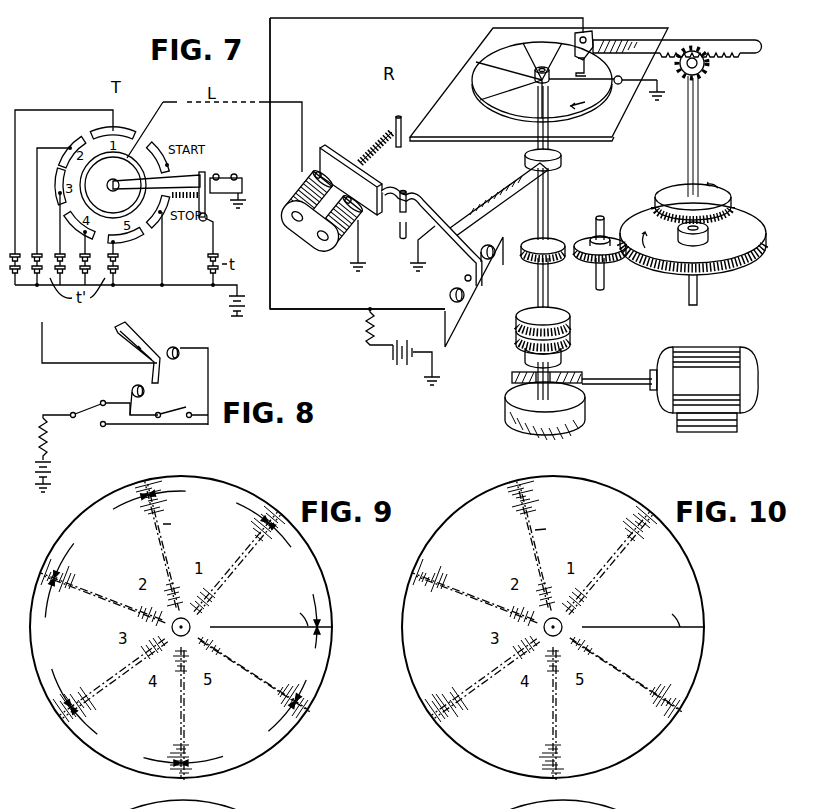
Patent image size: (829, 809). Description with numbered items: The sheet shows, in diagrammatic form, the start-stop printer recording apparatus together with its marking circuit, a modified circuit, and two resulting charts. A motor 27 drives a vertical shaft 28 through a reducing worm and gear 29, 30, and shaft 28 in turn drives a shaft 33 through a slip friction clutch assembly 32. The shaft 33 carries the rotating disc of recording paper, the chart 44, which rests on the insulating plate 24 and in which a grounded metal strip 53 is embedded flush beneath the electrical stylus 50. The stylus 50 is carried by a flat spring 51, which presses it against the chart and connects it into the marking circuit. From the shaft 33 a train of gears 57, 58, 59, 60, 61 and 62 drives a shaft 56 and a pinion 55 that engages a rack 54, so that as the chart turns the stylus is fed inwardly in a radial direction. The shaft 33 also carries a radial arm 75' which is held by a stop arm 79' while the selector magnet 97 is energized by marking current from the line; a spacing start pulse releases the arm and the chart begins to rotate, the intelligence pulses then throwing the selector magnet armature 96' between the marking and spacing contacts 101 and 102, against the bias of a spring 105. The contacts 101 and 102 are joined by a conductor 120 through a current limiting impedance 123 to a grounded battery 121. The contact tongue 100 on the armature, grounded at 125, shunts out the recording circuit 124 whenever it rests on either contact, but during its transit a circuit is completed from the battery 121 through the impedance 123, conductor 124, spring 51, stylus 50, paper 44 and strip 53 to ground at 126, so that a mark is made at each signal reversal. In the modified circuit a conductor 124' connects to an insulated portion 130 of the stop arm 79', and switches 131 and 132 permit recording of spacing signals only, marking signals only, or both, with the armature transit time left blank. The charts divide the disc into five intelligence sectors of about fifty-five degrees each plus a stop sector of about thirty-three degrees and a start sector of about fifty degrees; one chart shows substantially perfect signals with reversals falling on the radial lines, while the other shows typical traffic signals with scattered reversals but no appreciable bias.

In FIG. 7, the insulating plate 24 is at (450, 99).
In FIG. 7, the motor 27 is at (705, 347).
In FIG. 7, the vertical shaft 28 is at (553, 375).
In FIG. 7, the reducing worm 29 is at (518, 372).
In FIG. 7, the gear 30 is at (580, 416).
In FIG. 7, the slip friction clutch assembly 32 is at (572, 326).
In FIG. 7, the shaft 33 is at (550, 286).
In FIG. 7, the chart 44 is at (493, 50).
In FIG. 9, the chart 44 is at (327, 573).
In FIG. 10, the chart 44 is at (703, 573).
In FIG. 7, the stylus 50 is at (593, 76).
In FIG. 7, the flat spring 51 is at (588, 34).
In FIG. 7, the grounded metal strip 53 is at (620, 84).
In FIG. 7, the rack 54 is at (690, 42).
In FIG. 7, the pinion 55 is at (707, 72).
In FIG. 7, the shaft 56 is at (698, 135).
In FIG. 7, the gear 57 is at (716, 193).
In FIG. 7, the gear 58 is at (700, 240).
In FIG. 7, the gear 59 is at (748, 222).
In FIG. 7, the gear 60 is at (586, 232).
In FIG. 7, the gear 61 is at (604, 283).
In FIG. 7, the gear 62 is at (535, 243).
In FIG. 7, the radial arm 75' is at (505, 192).
In FIG. 7, the stop arm 79' is at (431, 238).
In FIG. 7, the selector magnet armature 96' is at (351, 170).
In FIG. 7, the selector magnet 97 is at (305, 185).
In FIG. 7, the contact tongue 100 is at (480, 256).
In FIG. 7, the marking contact 101 is at (451, 291).
In FIG. 7, the spacing contact 102 is at (489, 262).
In FIG. 7, the spring 105 is at (374, 158).
In FIG. 7, the conductor 120 is at (325, 309).
In FIG. 7, the grounded battery 121 is at (395, 365).
In FIG. 7, the current limiting impedance 123 is at (366, 330).
In FIG. 7, the recording circuit 124 is at (294, 163).
In FIG. 8, the conductor 124' is at (99, 342).
In FIG. 7, the ground 125 is at (416, 266).
In FIG. 7, the ground 126 is at (659, 98).
In FIG. 8, the insulated portion 130 is at (147, 348).
In FIG. 8, the switch 131 is at (73, 412).
In FIG. 8, the switch 132 is at (170, 412).